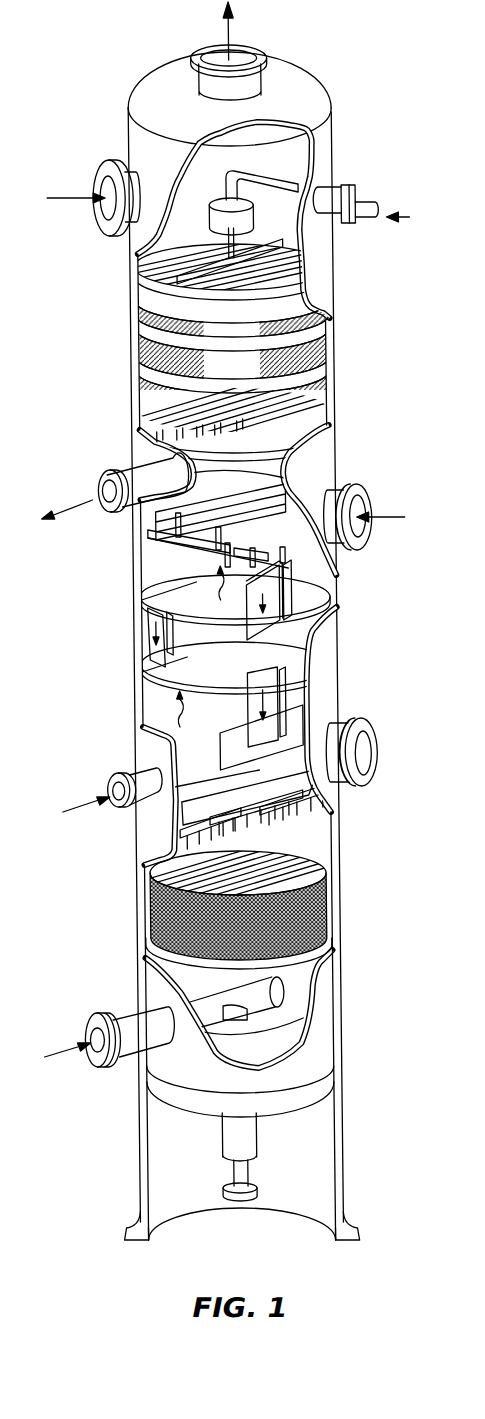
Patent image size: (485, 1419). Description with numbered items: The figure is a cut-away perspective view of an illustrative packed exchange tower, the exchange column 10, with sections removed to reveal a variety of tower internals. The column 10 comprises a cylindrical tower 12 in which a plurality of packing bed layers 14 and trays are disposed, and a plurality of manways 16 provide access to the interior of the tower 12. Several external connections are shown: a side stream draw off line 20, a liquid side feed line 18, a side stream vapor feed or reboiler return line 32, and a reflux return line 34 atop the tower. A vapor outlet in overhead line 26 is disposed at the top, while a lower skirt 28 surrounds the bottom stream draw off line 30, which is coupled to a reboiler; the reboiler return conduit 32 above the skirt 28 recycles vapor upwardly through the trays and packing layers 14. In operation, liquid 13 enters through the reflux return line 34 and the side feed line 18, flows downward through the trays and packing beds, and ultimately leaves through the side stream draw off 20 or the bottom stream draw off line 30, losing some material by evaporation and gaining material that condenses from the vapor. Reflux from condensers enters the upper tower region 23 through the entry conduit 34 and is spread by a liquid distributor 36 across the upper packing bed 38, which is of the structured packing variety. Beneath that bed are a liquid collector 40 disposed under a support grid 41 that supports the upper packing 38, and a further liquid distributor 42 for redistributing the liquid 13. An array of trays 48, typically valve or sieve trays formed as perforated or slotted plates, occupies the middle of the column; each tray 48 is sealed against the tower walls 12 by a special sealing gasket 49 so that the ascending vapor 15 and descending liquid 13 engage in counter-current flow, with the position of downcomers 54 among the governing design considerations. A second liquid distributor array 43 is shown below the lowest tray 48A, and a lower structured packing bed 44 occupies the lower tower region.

The exchange column 10 is at (352, 98).
The cylindrical tower 12 is at (320, 262).
The liquid 13 is at (316, 395).
The packing bed layers 14 is at (319, 336).
The ascending vapor 15 is at (170, 710).
The manways 16 is at (366, 497).
The liquid side feed line 18 is at (125, 770).
The side stream draw off line 20 is at (125, 465).
The upper tower region 23 is at (116, 367).
The overhead line 26 is at (263, 50).
The lower skirt 28 is at (307, 1158).
The bottom stream draw off line 30 is at (230, 1138).
The reboiler return line 32 is at (121, 1008).
The reflux return line 34 is at (340, 188).
The liquid distributor 36 is at (147, 266).
The upper packing bed 38 is at (137, 302).
The liquid collector 40 is at (293, 412).
The support grid 41 is at (319, 361).
The liquid distributor 42 is at (144, 533).
The second liquid distributor array 43 is at (294, 823).
The lower structured packing bed 44 is at (300, 885).
The trays 48 is at (157, 573).
The lowest tray 48A is at (279, 757).
The sealing gasket 49 is at (156, 609).
The downcomers 54 is at (163, 660).